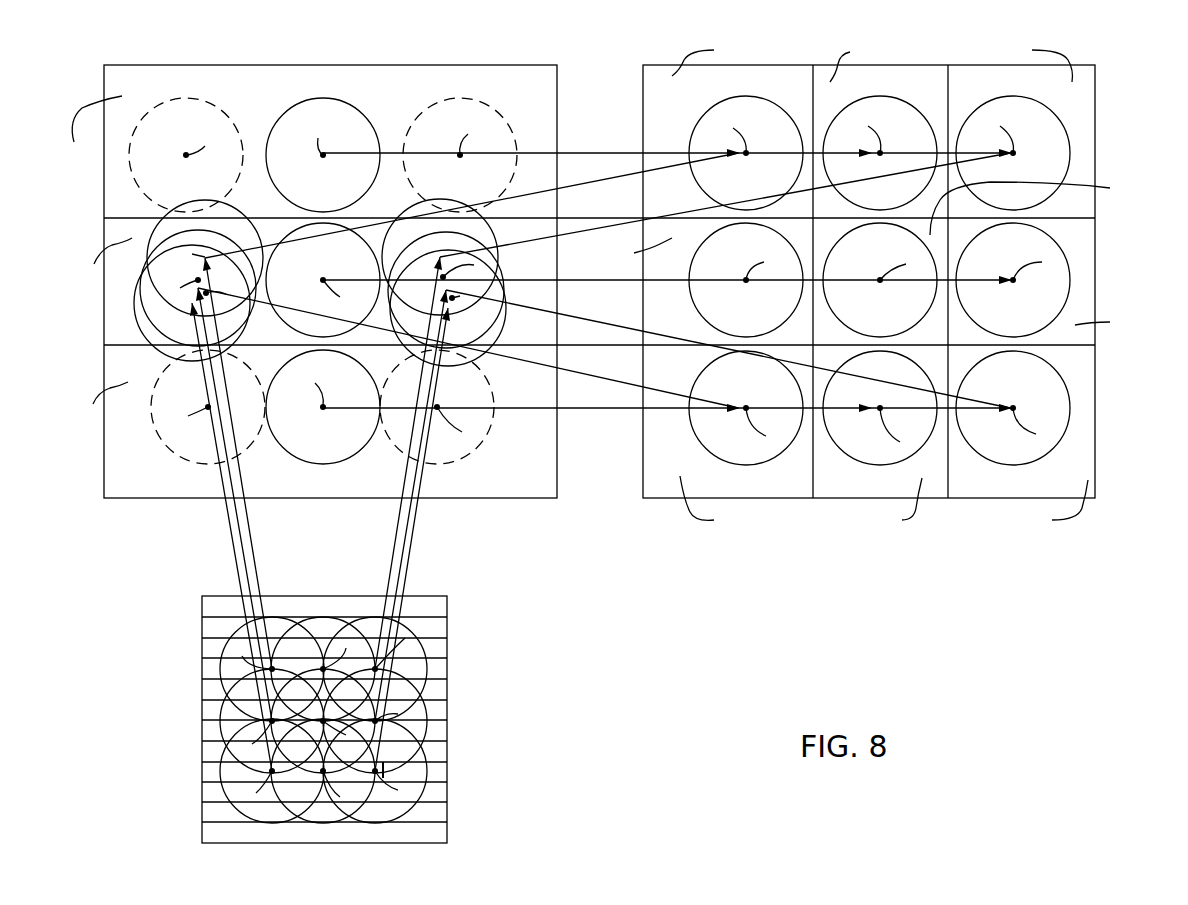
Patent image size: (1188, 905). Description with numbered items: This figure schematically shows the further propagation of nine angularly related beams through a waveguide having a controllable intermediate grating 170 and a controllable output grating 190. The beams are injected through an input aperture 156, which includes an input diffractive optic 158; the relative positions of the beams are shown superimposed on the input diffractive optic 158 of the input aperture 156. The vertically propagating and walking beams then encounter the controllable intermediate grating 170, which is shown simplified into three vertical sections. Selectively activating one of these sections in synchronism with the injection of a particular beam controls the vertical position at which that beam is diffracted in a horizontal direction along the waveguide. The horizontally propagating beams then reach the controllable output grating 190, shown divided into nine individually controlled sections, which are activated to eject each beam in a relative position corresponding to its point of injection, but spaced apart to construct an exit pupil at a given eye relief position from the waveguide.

The controllable intermediate grating 170 is at (220, 51).
The controllable output grating 190 is at (644, 57).
The input aperture 156 is at (196, 745).
The input diffractive optic 158 is at (445, 771).